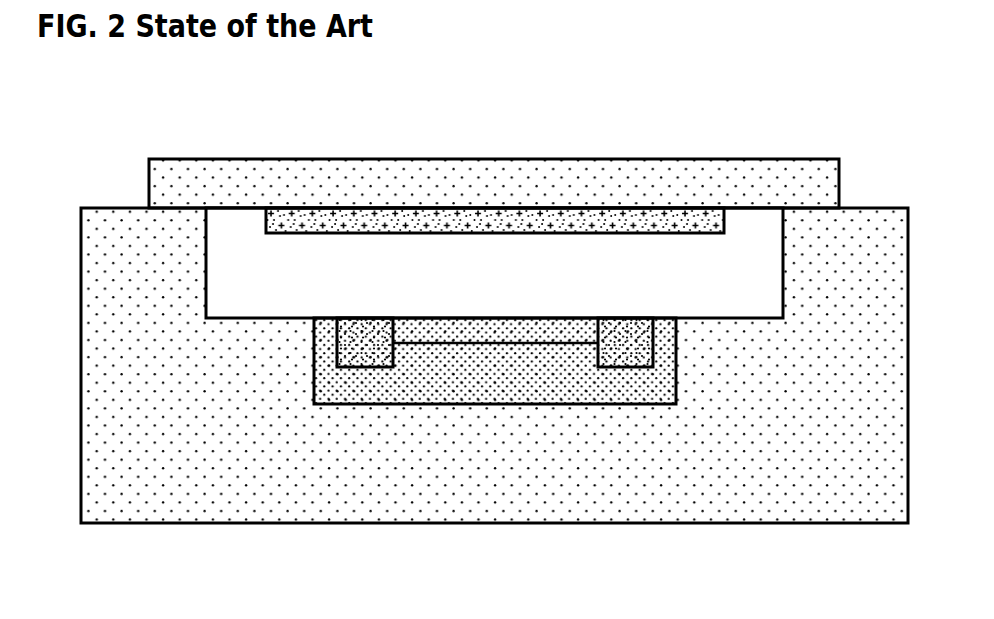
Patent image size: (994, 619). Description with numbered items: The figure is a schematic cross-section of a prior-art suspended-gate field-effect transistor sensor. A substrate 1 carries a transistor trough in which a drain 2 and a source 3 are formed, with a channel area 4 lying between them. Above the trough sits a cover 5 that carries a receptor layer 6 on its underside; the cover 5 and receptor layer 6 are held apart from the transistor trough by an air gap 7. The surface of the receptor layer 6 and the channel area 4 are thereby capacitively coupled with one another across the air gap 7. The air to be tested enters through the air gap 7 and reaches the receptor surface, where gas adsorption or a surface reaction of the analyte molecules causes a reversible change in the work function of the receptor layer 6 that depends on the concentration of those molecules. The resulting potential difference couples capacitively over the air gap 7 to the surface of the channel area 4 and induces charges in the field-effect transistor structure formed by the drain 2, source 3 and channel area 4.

The substrate 1 is at (179, 498).
The drain 2 is at (370, 367).
The source 3 is at (628, 367).
The channel area 4 is at (498, 343).
The cover 5 is at (352, 187).
The receptor layer 6 is at (445, 223).
The air gap 7 is at (523, 255).